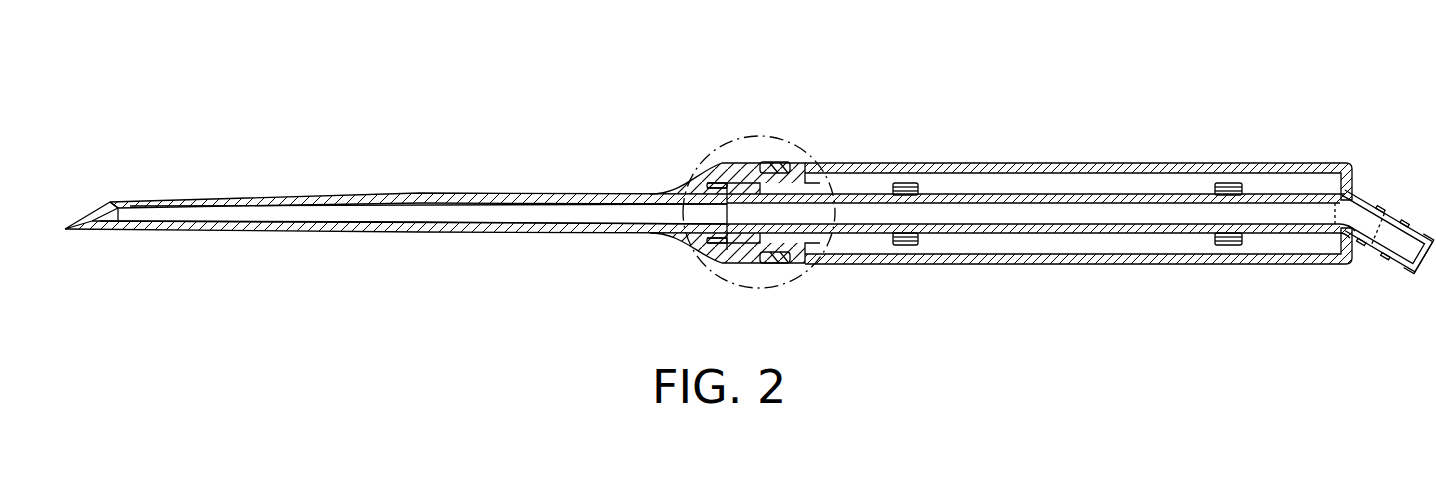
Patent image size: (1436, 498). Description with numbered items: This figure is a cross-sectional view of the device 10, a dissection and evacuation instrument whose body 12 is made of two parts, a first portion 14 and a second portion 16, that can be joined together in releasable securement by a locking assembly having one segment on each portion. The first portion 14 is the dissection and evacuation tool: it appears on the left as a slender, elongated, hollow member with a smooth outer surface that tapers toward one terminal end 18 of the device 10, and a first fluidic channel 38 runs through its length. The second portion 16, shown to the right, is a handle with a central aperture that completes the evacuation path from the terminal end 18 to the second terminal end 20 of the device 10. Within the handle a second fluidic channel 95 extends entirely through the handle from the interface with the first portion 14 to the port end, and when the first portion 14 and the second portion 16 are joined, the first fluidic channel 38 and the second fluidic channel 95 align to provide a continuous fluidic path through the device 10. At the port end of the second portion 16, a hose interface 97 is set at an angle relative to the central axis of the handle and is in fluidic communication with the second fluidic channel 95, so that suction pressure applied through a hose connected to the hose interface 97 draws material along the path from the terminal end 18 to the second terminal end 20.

The device 10 is at (943, 91).
The body 12 is at (708, 267).
The first portion 14 is at (359, 192).
The second portion 16 is at (1017, 162).
The terminal end 18 is at (145, 168).
The second terminal end 20 is at (1395, 183).
The first fluidic channel 38 is at (523, 213).
The second fluidic channel 95 is at (1128, 215).
The hose interface 97 is at (1388, 262).